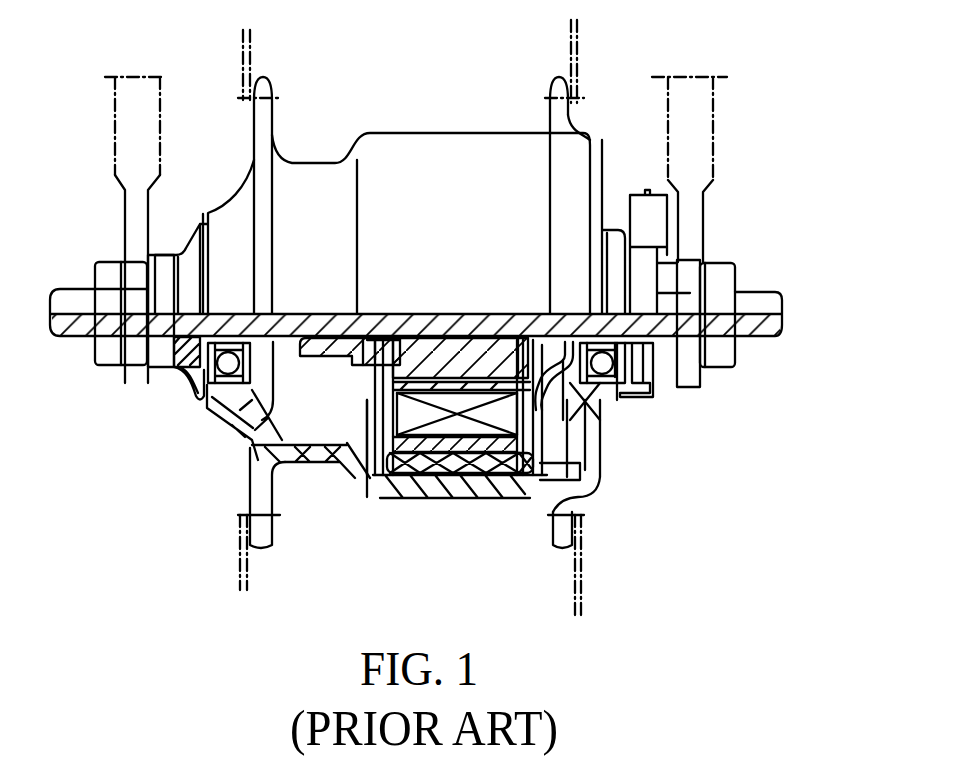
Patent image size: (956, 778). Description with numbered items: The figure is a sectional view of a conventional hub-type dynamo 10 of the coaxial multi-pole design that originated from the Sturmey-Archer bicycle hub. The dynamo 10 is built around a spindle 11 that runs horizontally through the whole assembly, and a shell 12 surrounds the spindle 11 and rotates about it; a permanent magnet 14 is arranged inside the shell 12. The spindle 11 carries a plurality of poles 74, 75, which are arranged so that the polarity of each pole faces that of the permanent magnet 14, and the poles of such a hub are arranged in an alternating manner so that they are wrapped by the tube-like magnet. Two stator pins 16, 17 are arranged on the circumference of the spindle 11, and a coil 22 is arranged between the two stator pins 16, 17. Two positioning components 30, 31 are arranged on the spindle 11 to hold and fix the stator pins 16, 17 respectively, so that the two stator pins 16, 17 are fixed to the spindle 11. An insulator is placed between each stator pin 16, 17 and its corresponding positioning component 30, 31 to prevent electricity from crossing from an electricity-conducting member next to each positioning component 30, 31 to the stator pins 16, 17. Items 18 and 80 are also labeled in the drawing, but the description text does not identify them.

The hub-type dynamo 10 is at (464, 70).
The spindle 11 is at (630, 317).
The shell 12 is at (497, 132).
The permanent magnet 14 is at (470, 428).
The stator pin 16 is at (522, 425).
The stator pin 17 is at (372, 397).
The core block 18 is at (440, 355).
The coil 22 is at (475, 445).
The positioning component 30 is at (605, 400).
The positioning component 31 is at (329, 373).
The pole 74 is at (585, 523).
The pole 75 is at (437, 442).
The spacer 80 is at (390, 350).